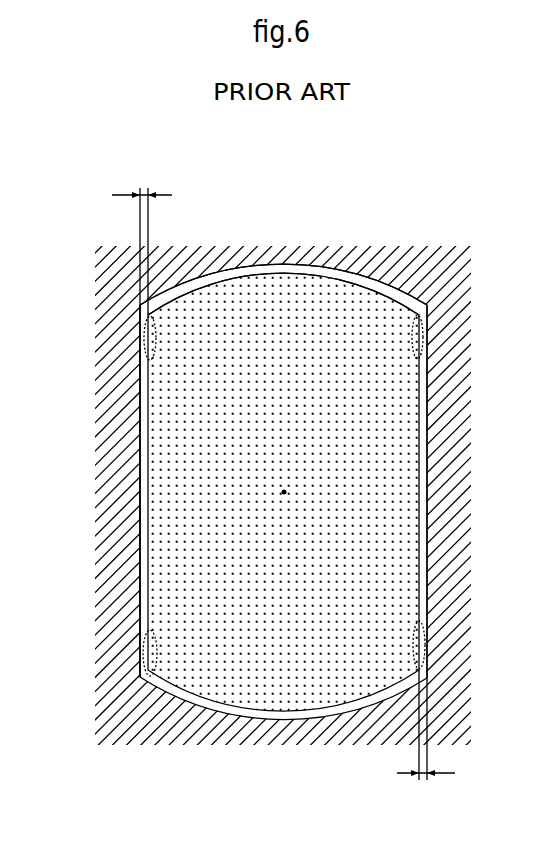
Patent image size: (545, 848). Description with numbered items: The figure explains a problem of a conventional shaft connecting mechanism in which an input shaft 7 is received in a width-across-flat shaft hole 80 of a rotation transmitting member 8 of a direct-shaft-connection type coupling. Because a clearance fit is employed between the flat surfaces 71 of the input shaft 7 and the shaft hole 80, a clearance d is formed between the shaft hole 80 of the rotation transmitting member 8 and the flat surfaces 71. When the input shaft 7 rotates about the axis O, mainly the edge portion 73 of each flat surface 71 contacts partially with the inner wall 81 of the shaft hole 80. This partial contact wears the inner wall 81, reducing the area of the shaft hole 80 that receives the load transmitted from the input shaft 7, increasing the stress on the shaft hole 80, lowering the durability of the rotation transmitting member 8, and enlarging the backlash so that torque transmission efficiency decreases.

The input shaft 7 is at (421, 418).
The flat surfaces 71 is at (145, 503).
The edge portion 73 is at (143, 344).
The width-across-flat shaft hole 80 is at (283, 262).
The inner wall 81 is at (140, 425).
The rotation transmitting member 8 is at (285, 756).
The axis O is at (286, 491).
The clearance d is at (283, 484).